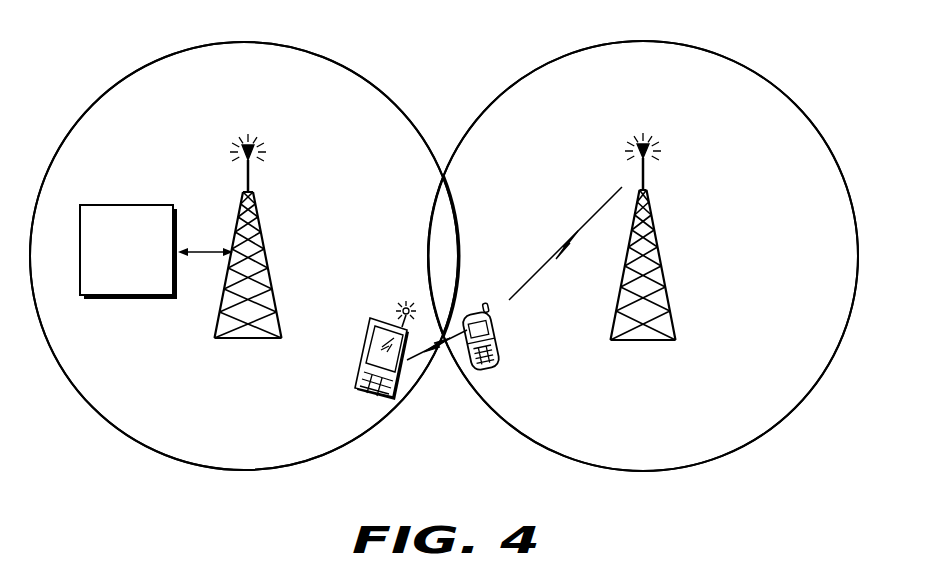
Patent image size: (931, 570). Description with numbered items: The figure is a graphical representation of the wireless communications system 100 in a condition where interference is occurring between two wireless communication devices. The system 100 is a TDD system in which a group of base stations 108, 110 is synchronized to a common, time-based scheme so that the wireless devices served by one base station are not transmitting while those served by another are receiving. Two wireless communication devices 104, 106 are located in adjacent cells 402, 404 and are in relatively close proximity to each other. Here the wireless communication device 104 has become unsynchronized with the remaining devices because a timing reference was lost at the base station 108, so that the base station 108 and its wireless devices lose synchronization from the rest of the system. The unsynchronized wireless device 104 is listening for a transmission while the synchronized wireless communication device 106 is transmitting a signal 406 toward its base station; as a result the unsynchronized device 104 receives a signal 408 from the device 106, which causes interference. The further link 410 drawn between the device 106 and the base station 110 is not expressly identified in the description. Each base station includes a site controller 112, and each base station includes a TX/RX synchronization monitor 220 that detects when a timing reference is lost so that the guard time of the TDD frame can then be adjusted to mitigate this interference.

The wireless communications system 100 is at (455, 31).
The wireless communication device 104 is at (366, 336).
The wireless communication device 106 is at (505, 361).
The base station 108 is at (263, 238).
The base station 110 is at (653, 342).
The site controller 112 is at (140, 205).
The TX/RX synchronization monitor 220 is at (103, 297).
The cell 402 is at (240, 470).
The cell 404 is at (643, 470).
The signal 406 is at (459, 236).
The signal 408 is at (432, 367).
The communication link between mobile station and base station 410 is at (572, 237).